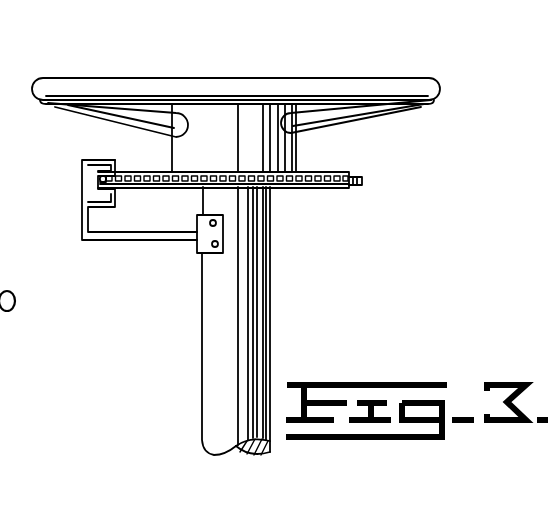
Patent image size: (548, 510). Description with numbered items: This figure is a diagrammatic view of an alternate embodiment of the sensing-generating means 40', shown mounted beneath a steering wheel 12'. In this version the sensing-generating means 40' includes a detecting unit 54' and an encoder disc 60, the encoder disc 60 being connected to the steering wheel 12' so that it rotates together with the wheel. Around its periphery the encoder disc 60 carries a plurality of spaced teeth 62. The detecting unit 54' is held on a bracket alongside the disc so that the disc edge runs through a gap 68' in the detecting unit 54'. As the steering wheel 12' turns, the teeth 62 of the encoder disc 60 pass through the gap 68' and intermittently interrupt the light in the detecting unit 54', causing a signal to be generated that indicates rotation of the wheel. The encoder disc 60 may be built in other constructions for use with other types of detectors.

The steering wheel 12' is at (253, 85).
The sensing-generating means 40' is at (330, 280).
The detecting unit 54' is at (117, 206).
The encoder disc 60 is at (363, 180).
The teeth 62 is at (268, 188).
The gap 68' is at (105, 153).